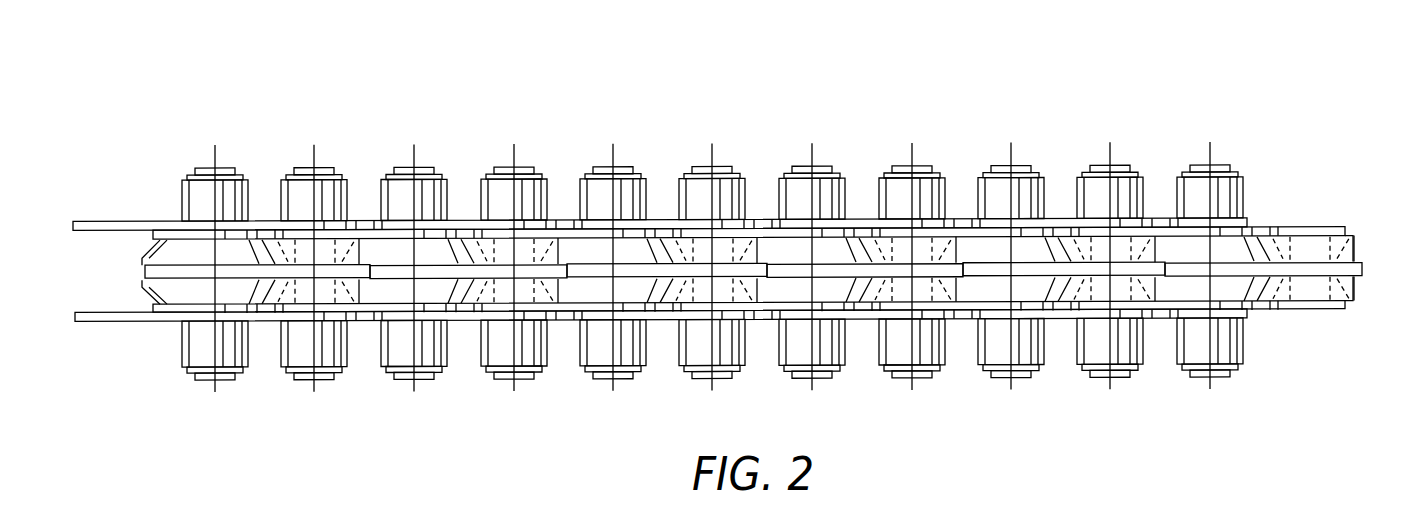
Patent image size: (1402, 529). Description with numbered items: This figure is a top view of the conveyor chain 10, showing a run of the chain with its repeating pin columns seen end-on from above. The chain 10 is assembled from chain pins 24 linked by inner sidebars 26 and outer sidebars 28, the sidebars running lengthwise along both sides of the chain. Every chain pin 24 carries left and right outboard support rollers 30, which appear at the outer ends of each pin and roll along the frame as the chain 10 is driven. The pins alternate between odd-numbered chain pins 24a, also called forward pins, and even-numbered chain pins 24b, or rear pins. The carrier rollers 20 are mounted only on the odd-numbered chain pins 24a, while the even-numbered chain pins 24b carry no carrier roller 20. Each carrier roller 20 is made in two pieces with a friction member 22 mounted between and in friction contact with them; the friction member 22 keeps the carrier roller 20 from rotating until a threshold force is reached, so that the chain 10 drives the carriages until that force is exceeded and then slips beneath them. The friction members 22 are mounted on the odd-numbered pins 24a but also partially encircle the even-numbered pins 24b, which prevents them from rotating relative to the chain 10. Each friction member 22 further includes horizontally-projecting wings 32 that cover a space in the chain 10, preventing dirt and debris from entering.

The chain 10 is at (828, 112).
The carrier roller 20 is at (748, 270).
The friction member 22 is at (753, 271).
The chain pin 24 is at (712, 267).
The odd-numbered chain pin 24a is at (712, 267).
The even-numbered chain pin 24b is at (712, 267).
The inner sidebar 26 is at (749, 270).
The outer sidebar 28 is at (660, 270).
The outboard support roller 30 is at (712, 272).
The wing 32 is at (807, 270).